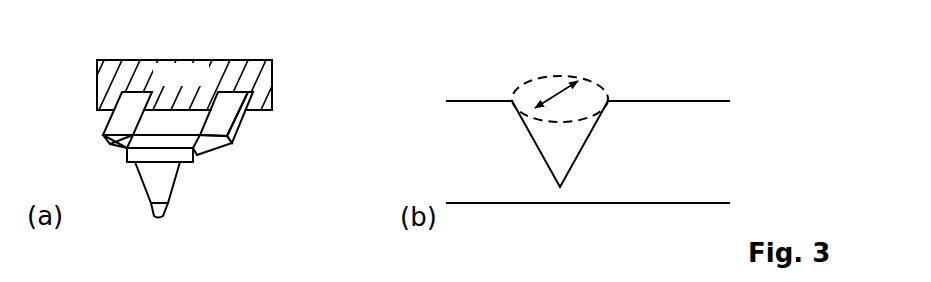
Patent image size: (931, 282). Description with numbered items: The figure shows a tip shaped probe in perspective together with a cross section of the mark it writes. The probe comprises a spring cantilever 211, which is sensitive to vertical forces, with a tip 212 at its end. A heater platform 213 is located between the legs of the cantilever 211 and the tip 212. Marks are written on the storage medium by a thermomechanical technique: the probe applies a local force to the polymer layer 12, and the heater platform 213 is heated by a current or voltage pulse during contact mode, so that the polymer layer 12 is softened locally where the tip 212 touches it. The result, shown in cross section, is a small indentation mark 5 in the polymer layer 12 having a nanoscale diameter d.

In FIG. 3a, the polymer layer 12 is at (299, 92).
In FIG. 3b, the polymer layer 12 is at (745, 144).
In FIG. 3a, the spring cantilever 211 is at (100, 121).
In FIG. 3a, the tip 212 is at (172, 186).
In FIG. 3a, the heater platform 213 is at (112, 139).
In FIG. 3b, the indentation mark 5 is at (606, 72).